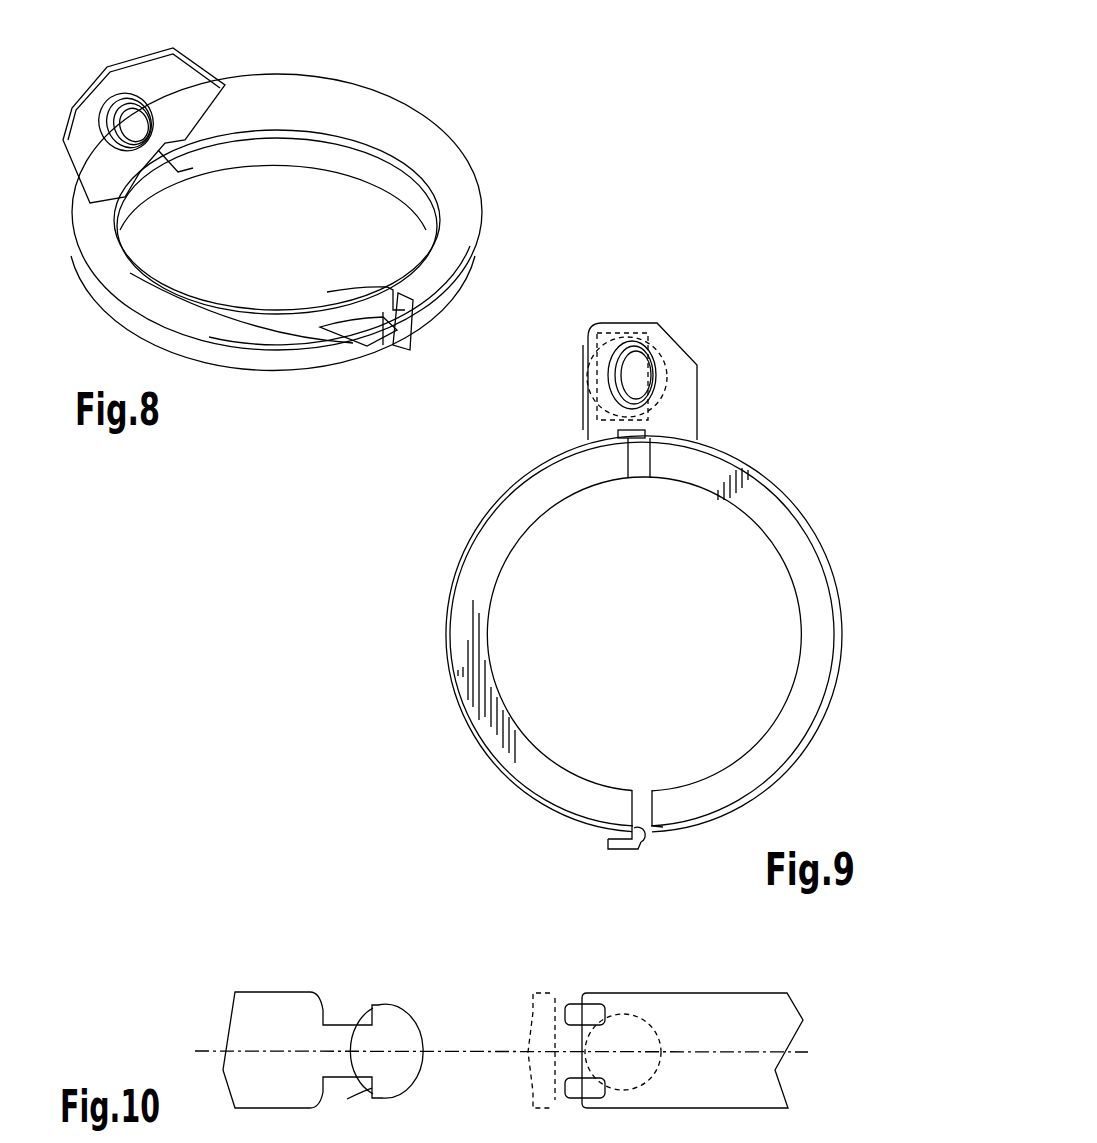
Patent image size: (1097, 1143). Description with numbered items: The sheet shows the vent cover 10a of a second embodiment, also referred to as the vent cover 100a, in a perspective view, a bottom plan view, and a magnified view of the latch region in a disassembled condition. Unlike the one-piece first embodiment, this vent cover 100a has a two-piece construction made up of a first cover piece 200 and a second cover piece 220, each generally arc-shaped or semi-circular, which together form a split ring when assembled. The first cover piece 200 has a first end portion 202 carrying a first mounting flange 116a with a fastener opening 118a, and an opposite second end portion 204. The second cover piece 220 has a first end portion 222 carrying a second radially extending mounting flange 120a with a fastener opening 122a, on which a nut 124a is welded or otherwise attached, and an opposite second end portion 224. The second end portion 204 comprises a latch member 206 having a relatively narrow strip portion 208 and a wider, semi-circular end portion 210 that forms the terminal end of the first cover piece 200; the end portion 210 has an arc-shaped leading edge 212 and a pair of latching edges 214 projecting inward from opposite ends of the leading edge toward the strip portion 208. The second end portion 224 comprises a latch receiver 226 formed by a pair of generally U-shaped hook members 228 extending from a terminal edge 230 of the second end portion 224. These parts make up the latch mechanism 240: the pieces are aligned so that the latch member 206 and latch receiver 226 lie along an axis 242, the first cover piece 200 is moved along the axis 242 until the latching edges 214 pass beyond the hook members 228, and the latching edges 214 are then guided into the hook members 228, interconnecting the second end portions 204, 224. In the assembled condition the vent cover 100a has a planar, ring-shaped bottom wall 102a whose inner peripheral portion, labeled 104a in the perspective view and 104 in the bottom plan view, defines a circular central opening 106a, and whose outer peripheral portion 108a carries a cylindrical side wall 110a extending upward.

In FIG. 8, the vent cover 10a is at (95, 312).
In FIG. 9, the vent cover 10a is at (530, 832).
In FIG. 8, the vent cover 100a is at (298, 223).
In FIG. 9, the vent cover 100a is at (629, 622).
In FIG. 8, the bottom wall 102a is at (440, 302).
In FIG. 9, the bottom wall 102a is at (745, 770).
In FIG. 9, the inner surface 104 is at (518, 723).
In FIG. 8, the inner surface 104a is at (410, 218).
In FIG. 8, the central opening 106a is at (320, 271).
In FIG. 9, the central opening 106a is at (670, 659).
In FIG. 8, the outer peripheral portion 108a is at (478, 265).
In FIG. 9, the outer peripheral portion 108a is at (460, 602).
In FIG. 8, the cylindrical side wall 110a is at (438, 158).
In FIG. 9, the cylindrical side wall 110a is at (838, 572).
In FIG. 8, the first mounting flange 116a is at (185, 75).
In FIG. 9, the first mounting flange 116a is at (685, 395).
In FIG. 8, the fastener opening 118a is at (150, 92).
In FIG. 9, the fastener opening 118a is at (655, 365).
In FIG. 9, the second mounting flange 120a is at (605, 430).
In FIG. 8, the fastener opening 122a is at (107, 183).
In FIG. 8, the nut 124a is at (80, 83).
In FIG. 9, the nut 124a is at (583, 375).
In FIG. 8, the first cover piece 200 is at (370, 110).
In FIG. 9, the first cover piece 200 is at (808, 688).
In FIG. 10, the first cover piece 200 is at (326, 1017).
In FIG. 8, the first end portion 202 is at (265, 98).
In FIG. 9, the first end portion 202 is at (700, 468).
In FIG. 8, the second end portion 204 is at (395, 335).
In FIG. 9, the second end portion 204 is at (678, 802).
In FIG. 10, the second end portion 204 is at (283, 1012).
In FIG. 8, the latch member 206 is at (375, 285).
In FIG. 9, the latch member 206 is at (648, 838).
In FIG. 10, the latch member 206 is at (403, 1017).
In FIG. 10, the strip portion 208 is at (337, 1040).
In FIG. 10, the end portion 210 is at (407, 1035).
In FIG. 10, the leading edge 212 is at (425, 1075).
In FIG. 10, the latching edges 214 is at (347, 1099).
In FIG. 8, the second cover piece 220 is at (233, 355).
In FIG. 9, the second cover piece 220 is at (468, 660).
In FIG. 10, the second cover piece 220 is at (664, 1043).
In FIG. 8, the first end portion 222 is at (120, 212).
In FIG. 9, the first end portion 222 is at (575, 472).
In FIG. 8, the second end portion 224 is at (358, 345).
In FIG. 9, the second end portion 224 is at (577, 792).
In FIG. 10, the second end portion 224 is at (668, 1005).
In FIG. 9, the latch receiver 226 is at (608, 846).
In FIG. 8, the hook members 228 is at (365, 318).
In FIG. 9, the hook members 228 is at (620, 882).
In FIG. 10, the hook members 228 is at (590, 1090).
In FIG. 9, the terminal edge 230 is at (638, 790).
In FIG. 10, the terminal edge 230 is at (575, 1042).
In FIG. 8, the latch mechanism 240 is at (369, 359).
In FIG. 9, the latch mechanism 240 is at (644, 807).
In FIG. 10, the latch mechanism 240 is at (507, 1013).
In FIG. 10, the axis 242 is at (213, 1048).